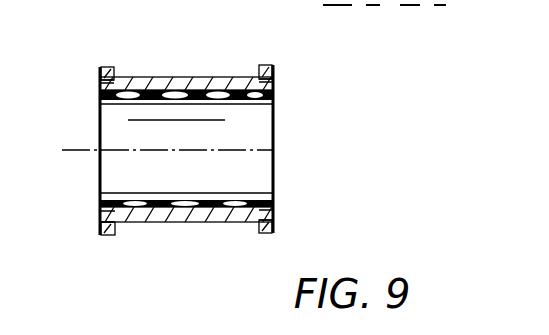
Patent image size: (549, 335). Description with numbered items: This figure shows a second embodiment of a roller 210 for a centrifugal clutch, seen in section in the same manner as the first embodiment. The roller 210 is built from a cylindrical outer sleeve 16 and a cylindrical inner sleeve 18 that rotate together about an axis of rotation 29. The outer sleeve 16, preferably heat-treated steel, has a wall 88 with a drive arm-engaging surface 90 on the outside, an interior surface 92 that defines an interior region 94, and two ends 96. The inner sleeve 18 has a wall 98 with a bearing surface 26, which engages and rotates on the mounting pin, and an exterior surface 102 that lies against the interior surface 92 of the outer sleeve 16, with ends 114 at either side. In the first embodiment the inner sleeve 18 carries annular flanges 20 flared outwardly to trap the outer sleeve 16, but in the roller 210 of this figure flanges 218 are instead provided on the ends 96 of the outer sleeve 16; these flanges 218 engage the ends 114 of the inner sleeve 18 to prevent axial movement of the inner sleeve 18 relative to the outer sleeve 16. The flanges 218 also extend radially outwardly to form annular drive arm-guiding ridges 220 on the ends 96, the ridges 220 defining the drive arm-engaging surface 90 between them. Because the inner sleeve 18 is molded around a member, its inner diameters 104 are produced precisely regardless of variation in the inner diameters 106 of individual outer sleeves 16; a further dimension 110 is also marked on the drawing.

The cylindrical outer sleeve 16 is at (197, 82).
The cylindrical inner sleeve 18 is at (222, 88).
The annular flanges 20 is at (266, 232).
The bearing surface 26 is at (249, 194).
The axis of rotation 29 is at (62, 150).
The wall 88 is at (142, 82).
The drive arm-engaging surface 90 is at (228, 225).
The interior surface 92 is at (156, 203).
The interior region 94 is at (150, 103).
The ends 96 is at (100, 78).
The wall 98 is at (130, 203).
The exterior surface 102 is at (200, 210).
The inner diameters 104 is at (168, 192).
The inner diameters 106 is at (211, 93).
The spacing dimension 110 is at (240, 83).
The ends 114 is at (113, 94).
The roller 210 is at (176, 62).
The flanges 218 is at (112, 84).
The annular drive arm-guiding ridges 220 is at (107, 67).